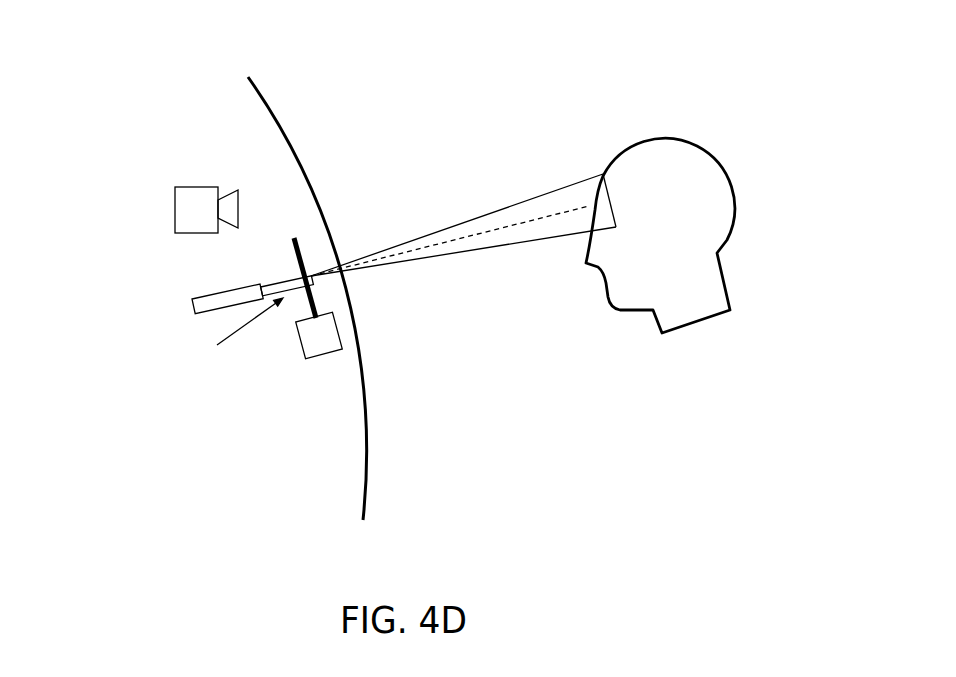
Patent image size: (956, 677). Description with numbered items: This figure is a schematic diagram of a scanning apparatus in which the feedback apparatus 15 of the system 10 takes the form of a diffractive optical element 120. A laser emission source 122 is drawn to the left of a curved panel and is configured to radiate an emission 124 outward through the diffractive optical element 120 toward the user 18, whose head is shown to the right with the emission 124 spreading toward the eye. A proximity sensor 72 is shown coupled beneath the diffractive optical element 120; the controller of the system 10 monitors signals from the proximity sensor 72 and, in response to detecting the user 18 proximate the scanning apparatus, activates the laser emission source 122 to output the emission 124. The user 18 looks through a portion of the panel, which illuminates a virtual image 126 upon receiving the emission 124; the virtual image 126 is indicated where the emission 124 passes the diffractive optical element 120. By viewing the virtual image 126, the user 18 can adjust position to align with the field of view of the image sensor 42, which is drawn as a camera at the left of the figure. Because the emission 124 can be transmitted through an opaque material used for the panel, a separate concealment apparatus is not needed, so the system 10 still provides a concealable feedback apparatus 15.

The system 10 is at (343, 120).
The feedback apparatus 15 is at (393, 327).
The user 18 is at (697, 273).
The image sensor 42 is at (182, 210).
The proximity sensor 72 is at (325, 347).
The diffractive optical element 120 is at (296, 241).
The laser emission source 122 is at (207, 298).
The emission 124 is at (483, 230).
The virtual image 126 is at (327, 283).